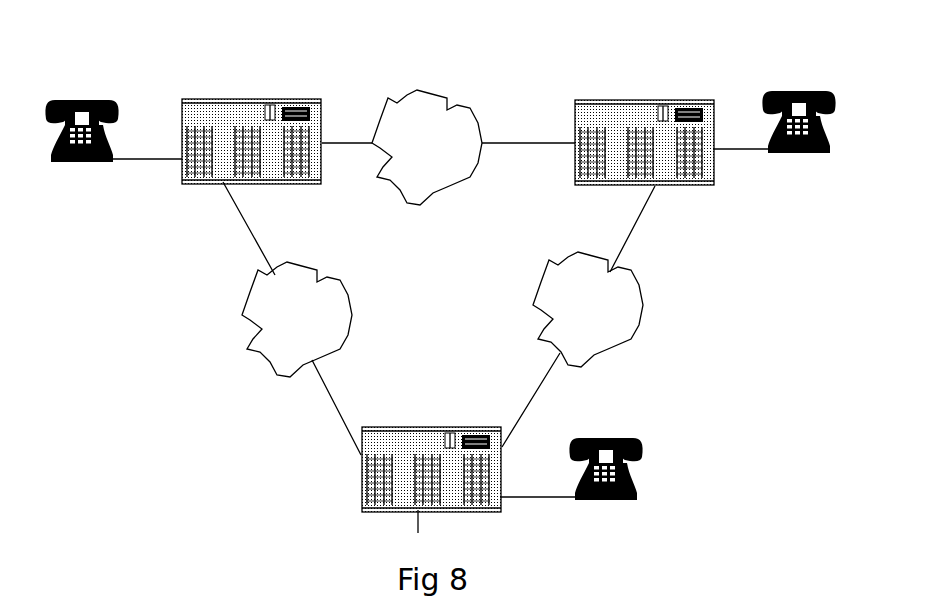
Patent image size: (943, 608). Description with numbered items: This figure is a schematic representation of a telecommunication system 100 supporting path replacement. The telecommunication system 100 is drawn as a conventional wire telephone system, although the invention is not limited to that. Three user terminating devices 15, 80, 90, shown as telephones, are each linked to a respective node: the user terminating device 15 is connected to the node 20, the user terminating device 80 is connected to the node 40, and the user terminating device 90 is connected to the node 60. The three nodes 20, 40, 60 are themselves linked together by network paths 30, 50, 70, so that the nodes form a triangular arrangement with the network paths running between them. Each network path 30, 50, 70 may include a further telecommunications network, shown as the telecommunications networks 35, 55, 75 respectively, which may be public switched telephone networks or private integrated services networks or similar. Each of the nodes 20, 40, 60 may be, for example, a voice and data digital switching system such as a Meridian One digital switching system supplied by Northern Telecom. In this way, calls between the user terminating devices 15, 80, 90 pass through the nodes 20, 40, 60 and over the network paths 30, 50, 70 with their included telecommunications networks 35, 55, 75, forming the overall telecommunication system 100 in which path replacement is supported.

The user terminating device 15 is at (72, 162).
The node 20 is at (251, 99).
The network path 30 is at (448, 77).
The telecommunications network 35 is at (432, 110).
The node 40 is at (623, 100).
The network path 50 is at (621, 316).
The telecommunications network 55 is at (610, 328).
The node 60 is at (370, 495).
The network path 70 is at (243, 318).
The telecommunications network 75 is at (264, 343).
The user terminating device 80 is at (803, 152).
The user terminating device 90 is at (645, 483).
The telecommunication system 100 is at (459, 257).